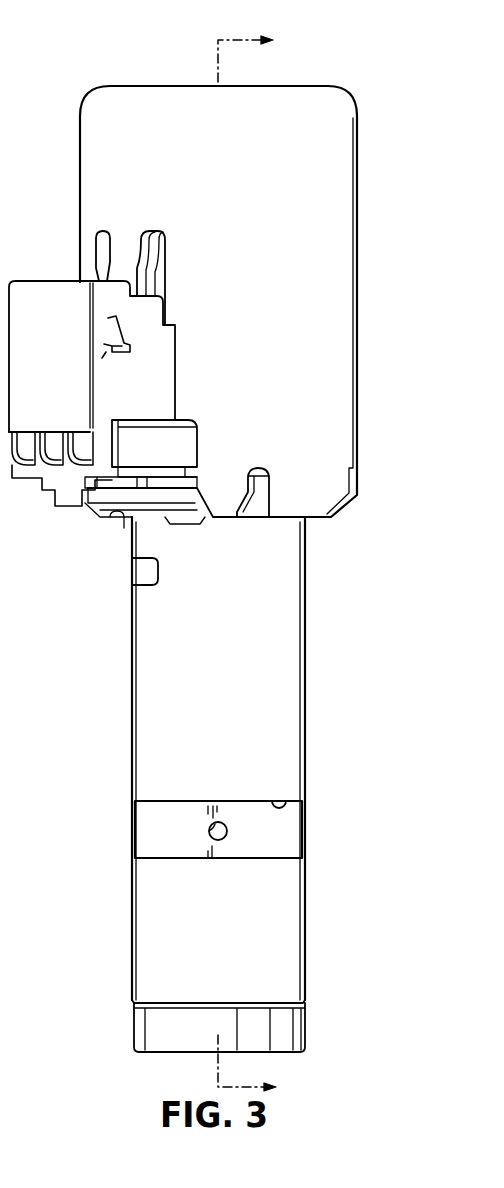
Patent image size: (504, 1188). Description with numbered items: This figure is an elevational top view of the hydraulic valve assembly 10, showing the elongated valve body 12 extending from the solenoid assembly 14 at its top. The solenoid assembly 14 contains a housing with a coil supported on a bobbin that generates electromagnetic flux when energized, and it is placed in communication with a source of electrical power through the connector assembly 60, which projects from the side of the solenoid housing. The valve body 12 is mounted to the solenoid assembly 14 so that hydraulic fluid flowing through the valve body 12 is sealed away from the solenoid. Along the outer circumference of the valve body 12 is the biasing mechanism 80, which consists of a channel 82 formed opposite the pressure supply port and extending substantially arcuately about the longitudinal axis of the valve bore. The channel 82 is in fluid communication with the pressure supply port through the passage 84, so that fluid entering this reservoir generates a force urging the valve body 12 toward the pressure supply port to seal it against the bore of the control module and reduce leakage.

The hydraulic valve assembly 10 is at (186, 562).
The valve body 12 is at (312, 580).
The solenoid assembly 14 is at (70, 135).
The connector assembly 60 is at (40, 290).
The biasing mechanism 80 is at (252, 808).
The channel 82 is at (286, 799).
The passage 84 is at (212, 823).